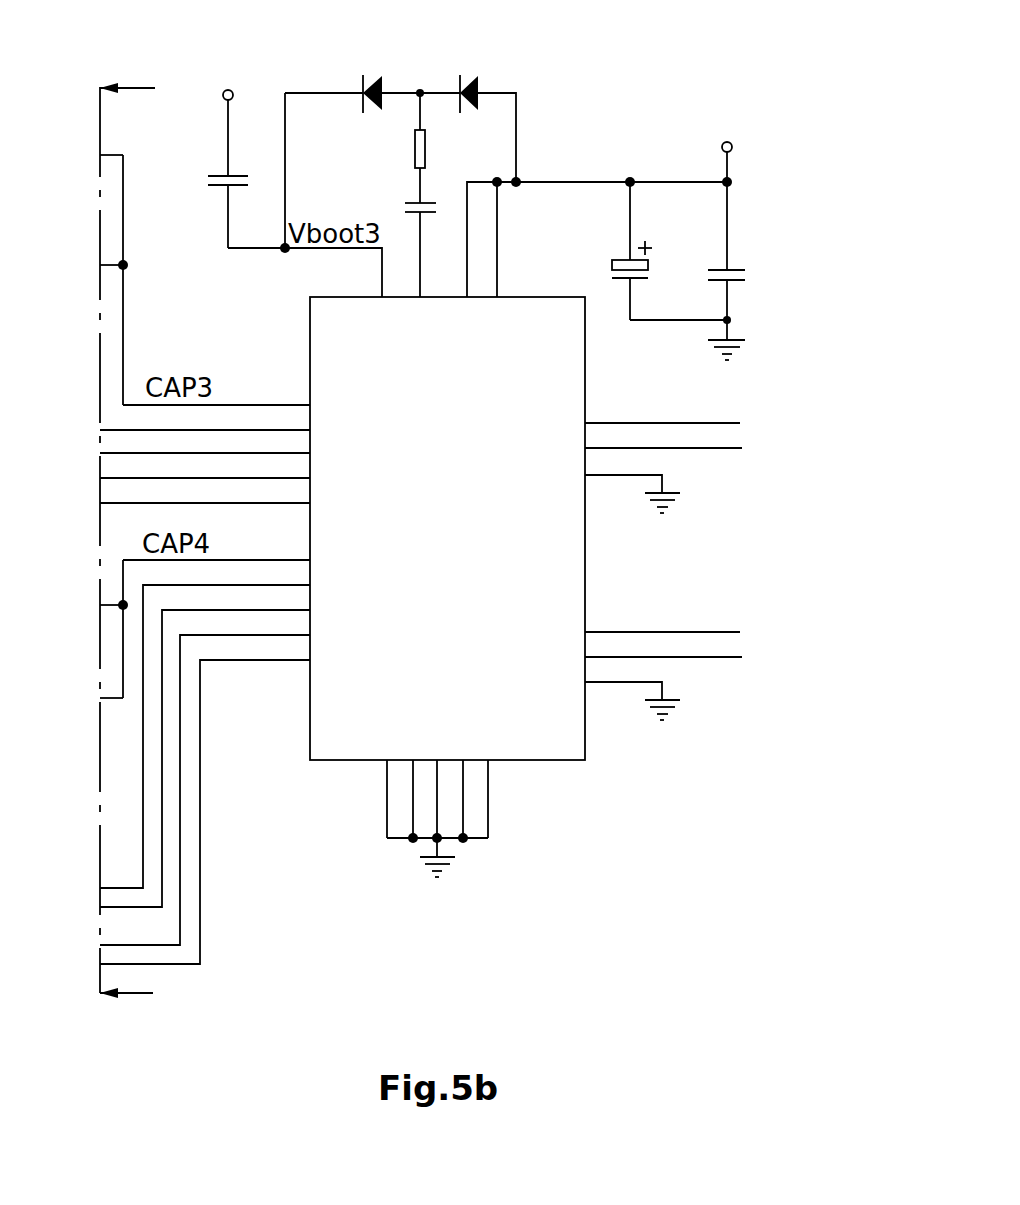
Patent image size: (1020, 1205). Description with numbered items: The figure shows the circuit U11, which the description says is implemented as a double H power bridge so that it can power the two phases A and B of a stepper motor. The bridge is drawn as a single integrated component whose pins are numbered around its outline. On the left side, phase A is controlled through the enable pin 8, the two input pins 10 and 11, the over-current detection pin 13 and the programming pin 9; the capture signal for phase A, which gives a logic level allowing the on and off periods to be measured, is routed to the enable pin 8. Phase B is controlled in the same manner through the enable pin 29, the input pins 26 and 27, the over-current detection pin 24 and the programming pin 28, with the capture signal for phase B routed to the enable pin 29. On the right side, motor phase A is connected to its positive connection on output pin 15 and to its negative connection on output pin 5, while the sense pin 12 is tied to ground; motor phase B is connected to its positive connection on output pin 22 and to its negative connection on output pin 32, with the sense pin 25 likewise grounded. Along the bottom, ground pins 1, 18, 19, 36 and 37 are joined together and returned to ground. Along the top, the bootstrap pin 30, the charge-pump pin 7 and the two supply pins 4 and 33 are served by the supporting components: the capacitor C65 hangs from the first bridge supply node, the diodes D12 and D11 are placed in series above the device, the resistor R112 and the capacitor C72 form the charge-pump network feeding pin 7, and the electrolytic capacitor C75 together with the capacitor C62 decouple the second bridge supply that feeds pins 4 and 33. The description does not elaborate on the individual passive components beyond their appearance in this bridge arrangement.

The circuit U11 is at (478, 558).
The EN_A pin 8 is at (216, 394).
The IN1_A pin 10 is at (205, 419).
The IN2_A pin 11 is at (205, 442).
The OCD_A pin 13 is at (205, 467).
The PROGCL_A pin 9 is at (205, 492).
The EN_B pin 29 is at (216, 549).
The IN1_B pin 26 is at (205, 724).
The IN2_B pin 27 is at (205, 746).
The OCD_B pin 24 is at (205, 777).
The PROGCL_B pin 28 is at (205, 799).
The OUT1_A pin 15 is at (670, 411).
The OUT2_A pin 5 is at (675, 436).
The SENSE_A pin 12 is at (632, 480).
The OUT1_B pin 22 is at (670, 619).
The OUT2_B pin 32 is at (675, 644).
The SENSE_B pin 25 is at (632, 688).
The GND pin 1 is at (372, 799).
The GND pin 18 is at (403, 799).
The GND pin 19 is at (428, 799).
The GND pin 36 is at (453, 799).
The GND pin 37 is at (478, 799).
The VBOOT pin 30 is at (306, 272).
The VCP pin 7 is at (406, 254).
The VS_A pin 4 is at (469, 239).
The VS_B pin 33 is at (486, 239).
The capacitor 100n C65 is at (213, 154).
The diode STPS0560Z D12 is at (350, 64).
The diode STPS0560Z D11 is at (522, 99).
The resistor 33R R112 is at (456, 146).
The capacitor 33n/100V C72 is at (363, 199).
The electrolytic capacitor 47u/50V C75 is at (613, 251).
The capacitor 100n C62 is at (748, 232).